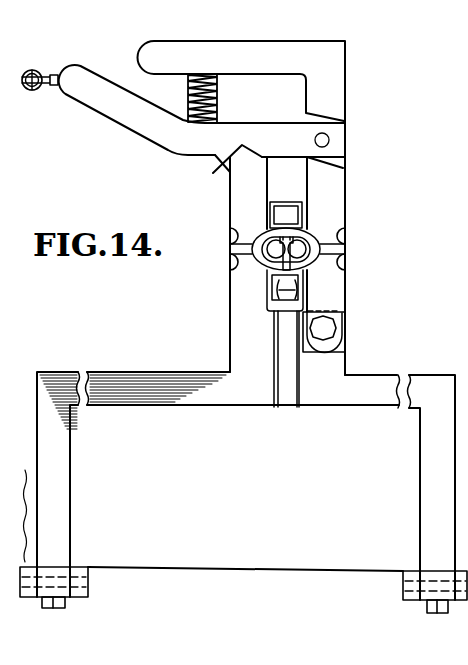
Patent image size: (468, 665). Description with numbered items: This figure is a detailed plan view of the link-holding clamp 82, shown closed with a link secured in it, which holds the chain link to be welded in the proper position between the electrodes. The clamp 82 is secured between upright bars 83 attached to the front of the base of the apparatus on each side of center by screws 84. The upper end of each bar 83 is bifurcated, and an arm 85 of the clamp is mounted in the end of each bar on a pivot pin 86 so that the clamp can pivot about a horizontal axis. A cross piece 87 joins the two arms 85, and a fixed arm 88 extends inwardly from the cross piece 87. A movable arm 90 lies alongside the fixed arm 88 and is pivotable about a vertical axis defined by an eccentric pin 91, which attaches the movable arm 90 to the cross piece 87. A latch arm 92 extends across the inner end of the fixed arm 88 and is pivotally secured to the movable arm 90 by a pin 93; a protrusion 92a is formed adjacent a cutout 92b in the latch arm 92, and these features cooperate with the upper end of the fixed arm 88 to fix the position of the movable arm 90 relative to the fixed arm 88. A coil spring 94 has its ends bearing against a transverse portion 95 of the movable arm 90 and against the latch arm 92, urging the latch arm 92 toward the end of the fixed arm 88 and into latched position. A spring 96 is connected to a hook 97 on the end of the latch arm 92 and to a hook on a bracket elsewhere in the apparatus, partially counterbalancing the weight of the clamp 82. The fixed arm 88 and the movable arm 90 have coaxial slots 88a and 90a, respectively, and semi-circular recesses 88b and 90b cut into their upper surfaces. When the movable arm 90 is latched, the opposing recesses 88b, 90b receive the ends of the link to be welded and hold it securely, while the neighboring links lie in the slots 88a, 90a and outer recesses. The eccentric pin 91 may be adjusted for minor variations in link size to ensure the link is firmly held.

The clamp 82 is at (199, 284).
The upright bars 83 is at (82, 597).
The screws 84 is at (57, 608).
The arm 85 is at (67, 475).
The pivot pin 86 is at (90, 582).
The cross piece 87 is at (175, 403).
The fixed arm 88 is at (228, 305).
The slot 88a is at (232, 250).
The semi-circular recess 88b is at (232, 237).
The movable arm 90 is at (346, 203).
The slot 90a is at (337, 253).
The semi-circular recess 90b is at (345, 237).
The eccentric pin 91 is at (330, 327).
The latch arm 92 is at (121, 125).
The protrusion 92a is at (220, 164).
The cutout 92b is at (252, 150).
The pin 93 is at (329, 142).
The coil spring 94 is at (188, 93).
The transverse portion 95 is at (279, 52).
The spring 96 is at (37, 89).
The hook 97 is at (33, 71).